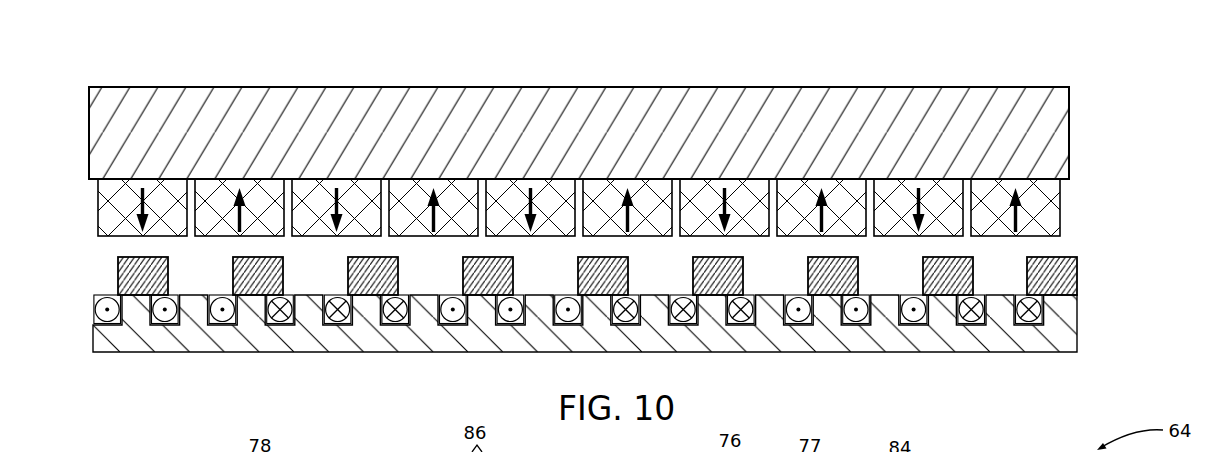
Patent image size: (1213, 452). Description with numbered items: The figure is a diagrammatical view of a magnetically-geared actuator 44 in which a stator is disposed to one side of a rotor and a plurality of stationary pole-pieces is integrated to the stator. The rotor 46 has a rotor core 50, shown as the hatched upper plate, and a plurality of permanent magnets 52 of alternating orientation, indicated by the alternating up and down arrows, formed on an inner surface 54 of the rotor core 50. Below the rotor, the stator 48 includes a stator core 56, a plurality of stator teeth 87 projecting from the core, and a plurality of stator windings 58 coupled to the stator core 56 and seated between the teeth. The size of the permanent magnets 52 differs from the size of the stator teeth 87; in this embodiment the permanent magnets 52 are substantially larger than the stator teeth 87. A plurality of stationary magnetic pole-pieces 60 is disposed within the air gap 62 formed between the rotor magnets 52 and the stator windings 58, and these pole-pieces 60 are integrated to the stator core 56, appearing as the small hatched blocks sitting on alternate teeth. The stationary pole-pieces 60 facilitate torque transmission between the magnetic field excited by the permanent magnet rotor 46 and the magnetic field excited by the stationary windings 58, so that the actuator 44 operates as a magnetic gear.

The magnetically-geared actuator 44 is at (1082, 62).
The rotor 46 is at (85, 90).
The stator 48 is at (85, 298).
The rotor core 50 is at (578, 93).
The permanent magnets 52 is at (273, 197).
The inner surface 54 is at (851, 213).
The stator core 56 is at (367, 340).
The stator windings 58 is at (268, 316).
The stationary magnetic pole-pieces 60 is at (858, 273).
The air gap 62 is at (675, 278).
The stator teeth 87 is at (997, 310).